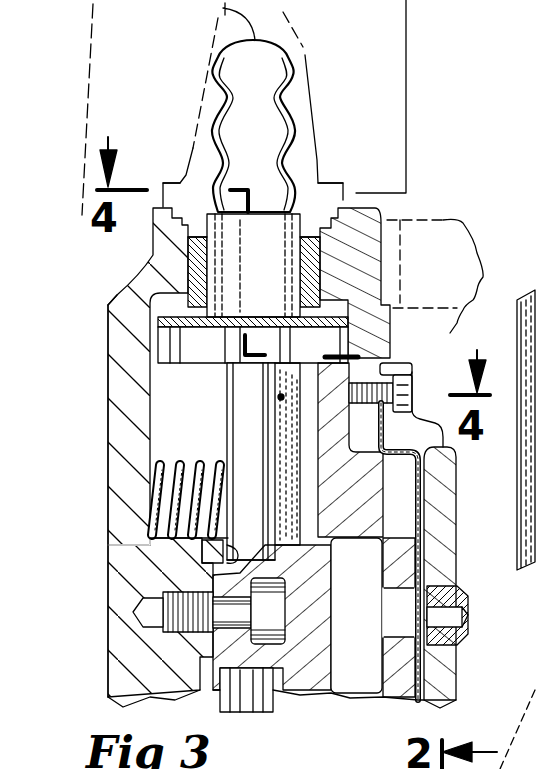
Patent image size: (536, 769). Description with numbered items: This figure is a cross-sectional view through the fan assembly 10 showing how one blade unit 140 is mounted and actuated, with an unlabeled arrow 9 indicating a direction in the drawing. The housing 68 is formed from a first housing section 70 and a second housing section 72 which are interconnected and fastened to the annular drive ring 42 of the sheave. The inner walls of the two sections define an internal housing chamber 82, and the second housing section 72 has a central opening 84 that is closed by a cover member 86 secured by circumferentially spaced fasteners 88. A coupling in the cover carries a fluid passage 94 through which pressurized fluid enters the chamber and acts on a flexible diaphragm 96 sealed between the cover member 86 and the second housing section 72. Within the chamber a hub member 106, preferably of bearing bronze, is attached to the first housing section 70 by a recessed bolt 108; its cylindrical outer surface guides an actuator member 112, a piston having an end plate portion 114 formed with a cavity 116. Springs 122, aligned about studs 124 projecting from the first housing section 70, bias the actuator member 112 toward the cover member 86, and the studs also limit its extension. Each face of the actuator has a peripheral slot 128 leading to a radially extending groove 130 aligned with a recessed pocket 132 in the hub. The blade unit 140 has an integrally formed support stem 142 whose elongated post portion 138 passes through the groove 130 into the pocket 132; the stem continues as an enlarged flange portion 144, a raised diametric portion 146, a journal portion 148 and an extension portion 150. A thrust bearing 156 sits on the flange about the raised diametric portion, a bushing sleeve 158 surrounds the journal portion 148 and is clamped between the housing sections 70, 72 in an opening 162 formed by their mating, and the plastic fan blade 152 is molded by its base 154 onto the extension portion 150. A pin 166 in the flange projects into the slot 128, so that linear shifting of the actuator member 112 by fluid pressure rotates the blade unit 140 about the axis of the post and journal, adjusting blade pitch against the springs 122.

The fan assembly 10 is at (468, 160).
The annular drive ring 42 is at (477, 253).
The housing 68 is at (110, 297).
The first housing section 70 is at (108, 372).
The second housing section 72 is at (390, 323).
The internal housing chamber 82 is at (148, 428).
The central opening 84 is at (370, 437).
The cover member 86 is at (457, 533).
The fasteners 88 is at (417, 383).
The fluid passage 94 is at (473, 630).
The flexible diaphragm 96 is at (450, 452).
The hub member 106 is at (293, 697).
The recessed bolt 108 is at (133, 612).
The actuator member 112 is at (395, 713).
The end plate portion 114 is at (400, 680).
The cavity 116 is at (373, 653).
The springs 122 is at (177, 460).
The studs 124 is at (157, 503).
The peripheral slot 128 is at (287, 393).
The radially extending groove 130 is at (300, 440).
The recessed pocket 132 is at (213, 578).
The elongated post portion 138 is at (233, 427).
The blade unit 140 is at (413, 40).
The support stem 142 is at (170, 378).
The enlarged flange portion 144 is at (160, 342).
The raised diametric portion 146 is at (242, 280).
The journal portion 148 is at (272, 212).
The extension portion 150 is at (223, 13).
The fan blade 152 is at (87, 33).
The base 154 is at (309, 67).
The thrust bearing 156 is at (157, 317).
The bushing sleeve 158 is at (193, 200).
The openings 162 is at (316, 193).
The pin 166 is at (276, 390).
The arrow 9 is at (472, 622).